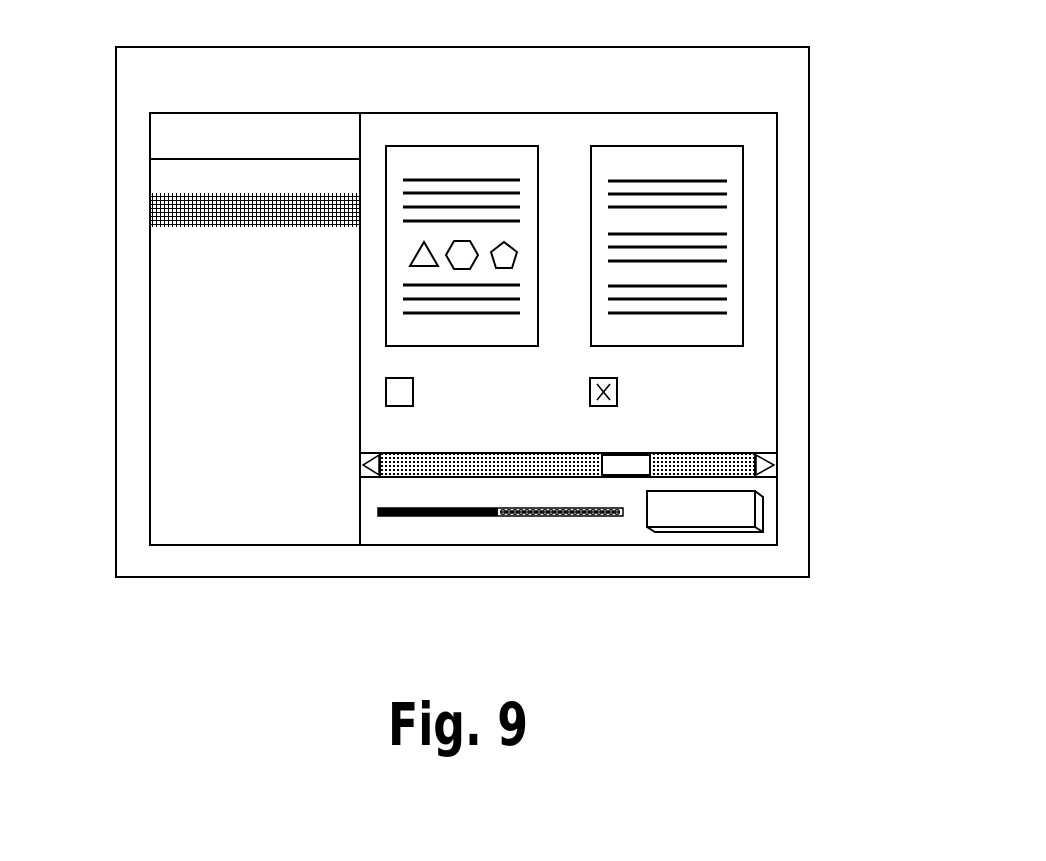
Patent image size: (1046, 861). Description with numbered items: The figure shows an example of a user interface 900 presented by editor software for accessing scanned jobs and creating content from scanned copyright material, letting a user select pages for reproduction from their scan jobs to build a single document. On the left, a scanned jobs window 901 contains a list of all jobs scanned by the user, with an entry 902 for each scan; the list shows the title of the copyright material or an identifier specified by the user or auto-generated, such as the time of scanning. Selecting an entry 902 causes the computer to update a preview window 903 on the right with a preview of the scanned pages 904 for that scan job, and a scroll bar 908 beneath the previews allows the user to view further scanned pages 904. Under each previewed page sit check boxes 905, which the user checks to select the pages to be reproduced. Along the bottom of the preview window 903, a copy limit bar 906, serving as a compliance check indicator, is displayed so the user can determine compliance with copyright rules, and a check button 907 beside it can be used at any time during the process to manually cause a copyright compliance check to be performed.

The user interface 900 is at (785, 88).
The scanned jobs window 901 is at (148, 112).
The entry 902 is at (148, 203).
The preview window 903 is at (778, 325).
The scanned pages 904 is at (440, 346).
The check boxes 905 is at (388, 390).
The copy limit bar 906 is at (437, 516).
The check button 907 is at (702, 532).
The scroll bar 908 is at (753, 452).